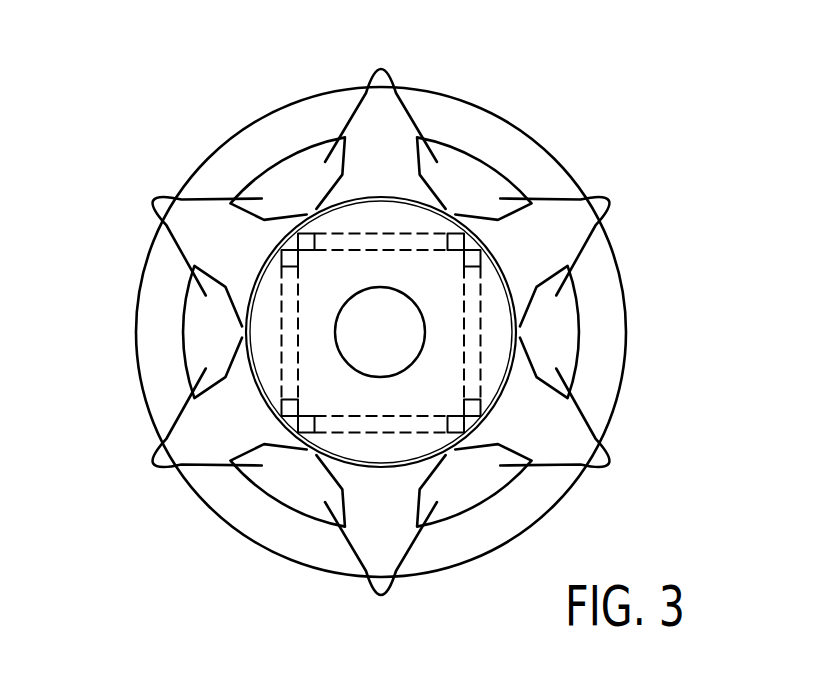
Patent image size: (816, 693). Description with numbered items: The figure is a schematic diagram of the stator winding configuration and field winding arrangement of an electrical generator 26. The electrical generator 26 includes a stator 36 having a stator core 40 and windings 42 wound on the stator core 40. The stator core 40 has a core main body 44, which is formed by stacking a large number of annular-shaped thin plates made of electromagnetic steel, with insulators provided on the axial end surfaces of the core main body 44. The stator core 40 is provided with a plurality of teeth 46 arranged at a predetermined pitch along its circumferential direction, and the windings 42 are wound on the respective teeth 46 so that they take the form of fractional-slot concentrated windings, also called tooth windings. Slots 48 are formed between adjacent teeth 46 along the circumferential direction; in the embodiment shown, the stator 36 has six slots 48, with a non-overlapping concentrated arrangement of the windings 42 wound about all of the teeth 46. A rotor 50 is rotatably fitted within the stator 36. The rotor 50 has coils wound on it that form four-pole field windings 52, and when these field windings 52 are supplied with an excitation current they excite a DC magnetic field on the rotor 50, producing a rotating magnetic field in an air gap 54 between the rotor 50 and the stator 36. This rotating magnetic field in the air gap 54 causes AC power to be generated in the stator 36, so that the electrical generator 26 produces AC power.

The electrical generator 26 is at (566, 90).
The stator 36 is at (629, 393).
The stator core 40 is at (165, 327).
The windings 42 is at (154, 212).
The core main body 44 is at (208, 161).
The teeth 46 is at (533, 311).
The slots 48 is at (300, 481).
The rotor 50 is at (397, 351).
The field windings 52 is at (308, 257).
The air gap 54 is at (458, 205).